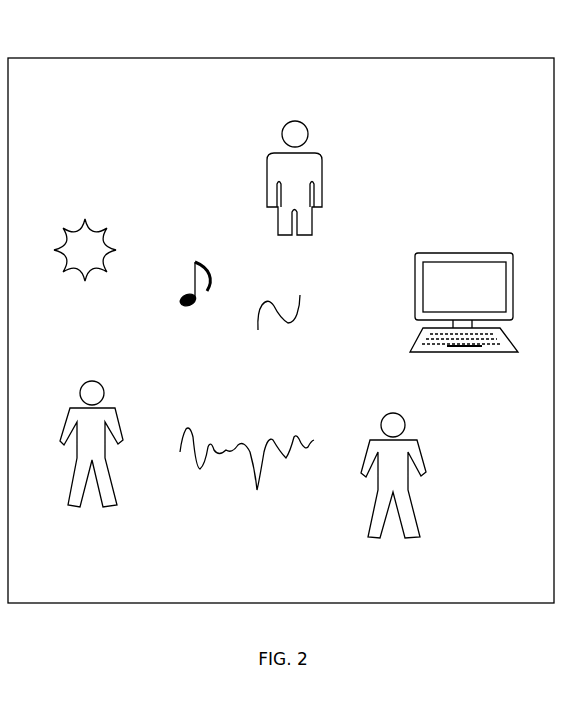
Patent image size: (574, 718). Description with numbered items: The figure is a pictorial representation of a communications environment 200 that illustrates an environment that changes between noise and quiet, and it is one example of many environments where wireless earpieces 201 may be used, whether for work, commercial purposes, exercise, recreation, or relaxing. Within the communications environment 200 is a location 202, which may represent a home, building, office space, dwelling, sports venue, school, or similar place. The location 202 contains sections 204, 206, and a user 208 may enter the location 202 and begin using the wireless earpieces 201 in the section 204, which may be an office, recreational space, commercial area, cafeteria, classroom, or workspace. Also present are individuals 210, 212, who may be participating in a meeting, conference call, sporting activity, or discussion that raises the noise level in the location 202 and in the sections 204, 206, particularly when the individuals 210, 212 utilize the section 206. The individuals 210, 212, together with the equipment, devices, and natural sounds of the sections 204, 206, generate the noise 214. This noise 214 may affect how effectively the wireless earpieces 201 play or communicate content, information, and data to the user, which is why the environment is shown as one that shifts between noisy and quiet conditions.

The communications environment 200 is at (59, 97).
The wireless earpieces 201 is at (282, 138).
The location 202 is at (91, 58).
The section 204 is at (461, 206).
The section 206 is at (267, 177).
The user 208 is at (492, 476).
The individual 210 is at (77, 489).
The individual 212 is at (403, 493).
The noise 214 is at (299, 323).